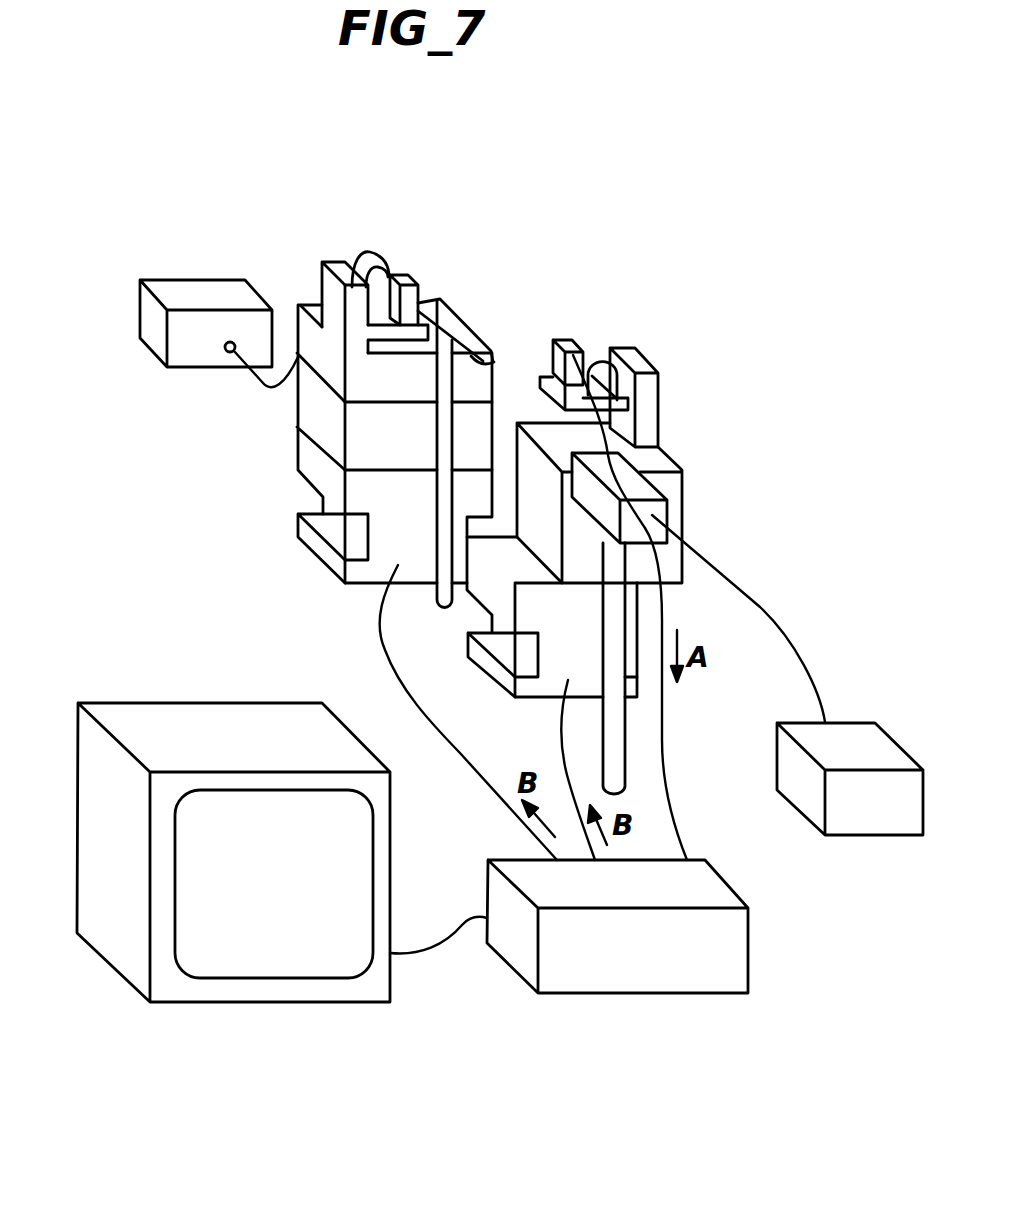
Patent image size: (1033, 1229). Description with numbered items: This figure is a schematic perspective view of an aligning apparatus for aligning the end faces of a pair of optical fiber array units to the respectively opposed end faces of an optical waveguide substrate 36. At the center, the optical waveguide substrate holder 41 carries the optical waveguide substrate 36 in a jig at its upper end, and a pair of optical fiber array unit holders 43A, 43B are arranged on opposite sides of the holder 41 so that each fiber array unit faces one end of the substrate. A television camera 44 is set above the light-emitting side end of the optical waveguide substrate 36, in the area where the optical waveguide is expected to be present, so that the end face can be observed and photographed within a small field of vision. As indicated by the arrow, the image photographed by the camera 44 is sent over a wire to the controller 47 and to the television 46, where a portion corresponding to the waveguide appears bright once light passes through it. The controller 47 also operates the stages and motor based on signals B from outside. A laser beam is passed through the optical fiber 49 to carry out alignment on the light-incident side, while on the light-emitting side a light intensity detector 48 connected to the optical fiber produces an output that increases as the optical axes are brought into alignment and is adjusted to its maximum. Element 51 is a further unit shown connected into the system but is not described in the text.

The optical waveguide substrate 36 is at (492, 362).
The optical waveguide substrate holder 41 is at (433, 527).
The optical fiber array unit holder 43A is at (696, 436).
The optical fiber array unit holder 43B is at (405, 238).
The camera 44 is at (655, 510).
The television 46 is at (298, 988).
The controller 47 is at (622, 957).
The light intensity detector 48 is at (867, 813).
The optical fiber 49 is at (263, 383).
The light source unit 51 is at (207, 288).